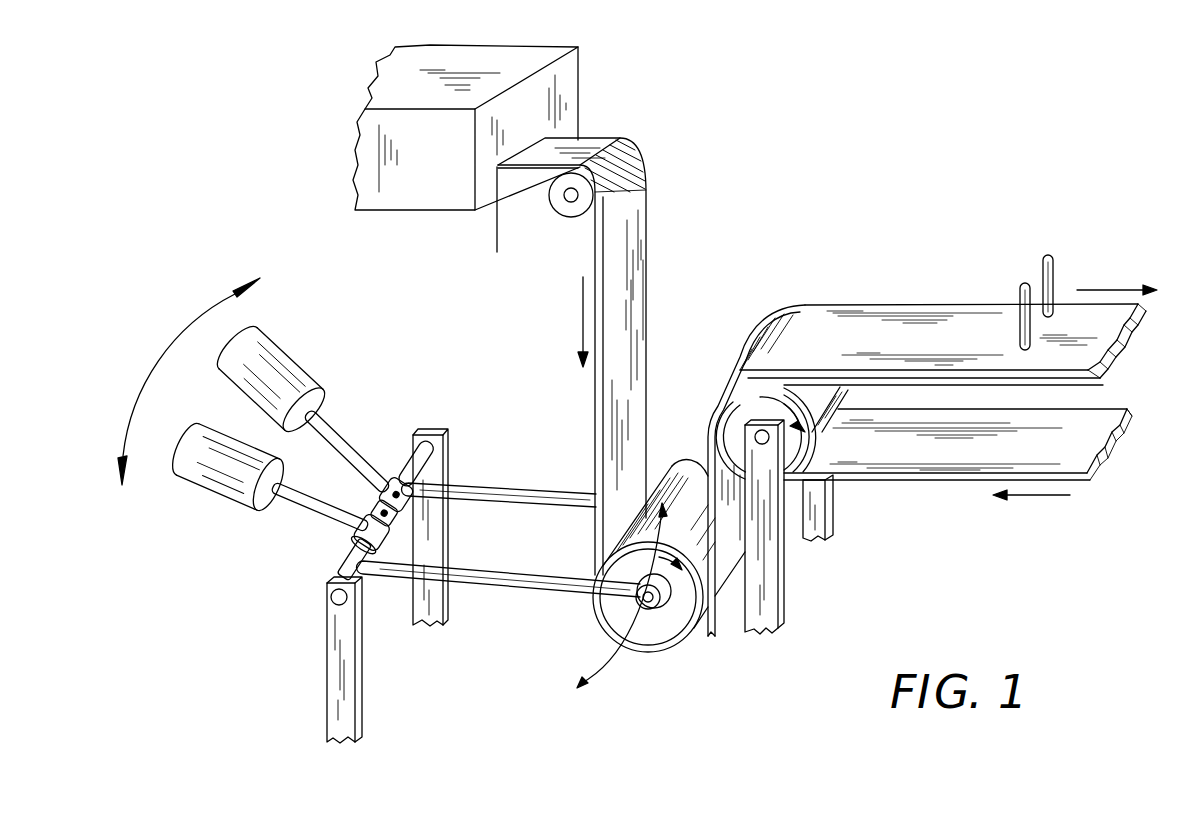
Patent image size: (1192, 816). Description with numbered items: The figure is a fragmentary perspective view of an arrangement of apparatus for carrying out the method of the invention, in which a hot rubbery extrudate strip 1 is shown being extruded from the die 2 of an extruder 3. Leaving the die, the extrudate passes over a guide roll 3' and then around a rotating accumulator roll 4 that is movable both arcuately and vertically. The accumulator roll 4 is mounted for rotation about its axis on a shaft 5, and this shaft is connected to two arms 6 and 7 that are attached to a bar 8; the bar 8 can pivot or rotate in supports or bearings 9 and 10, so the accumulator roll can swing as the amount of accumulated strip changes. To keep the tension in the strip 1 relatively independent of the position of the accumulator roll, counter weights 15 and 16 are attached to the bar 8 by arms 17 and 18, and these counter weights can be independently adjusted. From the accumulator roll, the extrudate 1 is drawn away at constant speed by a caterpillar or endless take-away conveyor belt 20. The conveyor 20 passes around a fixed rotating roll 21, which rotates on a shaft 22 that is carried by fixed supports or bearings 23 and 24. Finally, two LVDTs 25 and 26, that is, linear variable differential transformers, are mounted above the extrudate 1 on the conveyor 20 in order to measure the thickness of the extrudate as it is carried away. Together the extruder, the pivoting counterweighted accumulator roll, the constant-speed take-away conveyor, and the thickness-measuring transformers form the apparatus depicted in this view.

The hot rubbery extrudate strip 1 is at (636, 296).
The die 2 is at (497, 252).
The extruder 3 is at (491, 118).
The guide roll 3' is at (557, 210).
The accumulator roll 4 is at (690, 463).
The shaft 5 is at (636, 598).
The arm 6 is at (498, 493).
The arm 7 is at (492, 577).
The bar 8 is at (417, 457).
The support or bearing 9 is at (330, 675).
The support or bearing 10 is at (437, 605).
The counter weight 15 is at (280, 363).
The counter weight 16 is at (217, 467).
The arm 17 is at (317, 510).
The arm 18 is at (333, 440).
The take-away conveyor 20 is at (1127, 353).
The fixed rotating roll 21 is at (797, 433).
The shaft 22 is at (759, 431).
The fixed support or bearing 23 is at (768, 592).
The fixed support or bearing 24 is at (823, 513).
The LVDT 25 is at (1017, 303).
The LVDT 26 is at (1053, 280).